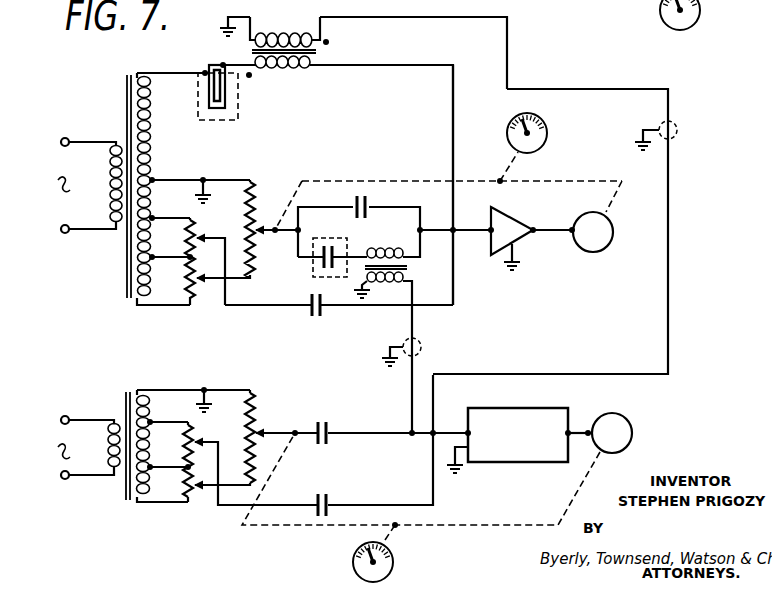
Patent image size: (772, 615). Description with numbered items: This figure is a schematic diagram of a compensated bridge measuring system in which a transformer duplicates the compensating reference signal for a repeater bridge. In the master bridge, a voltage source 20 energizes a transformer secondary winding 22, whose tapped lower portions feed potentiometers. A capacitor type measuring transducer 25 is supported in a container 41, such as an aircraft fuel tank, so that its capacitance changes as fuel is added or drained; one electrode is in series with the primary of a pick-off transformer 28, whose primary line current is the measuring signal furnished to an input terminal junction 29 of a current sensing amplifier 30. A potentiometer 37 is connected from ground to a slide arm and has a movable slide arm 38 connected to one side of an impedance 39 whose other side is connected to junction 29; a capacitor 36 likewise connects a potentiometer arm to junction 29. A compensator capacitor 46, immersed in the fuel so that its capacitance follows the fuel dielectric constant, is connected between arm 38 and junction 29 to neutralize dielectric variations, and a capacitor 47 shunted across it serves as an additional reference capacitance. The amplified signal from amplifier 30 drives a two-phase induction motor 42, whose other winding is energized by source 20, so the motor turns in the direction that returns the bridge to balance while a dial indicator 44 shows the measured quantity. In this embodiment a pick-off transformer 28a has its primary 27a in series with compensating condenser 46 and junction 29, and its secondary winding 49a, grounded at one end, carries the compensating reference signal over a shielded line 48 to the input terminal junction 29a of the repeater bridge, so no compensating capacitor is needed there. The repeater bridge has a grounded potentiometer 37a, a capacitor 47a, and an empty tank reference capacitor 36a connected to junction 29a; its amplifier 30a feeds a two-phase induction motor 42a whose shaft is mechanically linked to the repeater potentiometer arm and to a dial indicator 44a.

The voltage source 20 is at (92, 205).
The secondary winding 22 is at (150, 156).
The capacitor type measuring transducer 25 is at (232, 93).
The container 41 is at (238, 108).
The pick-off transformer 28 is at (320, 52).
The potentiometer 37 is at (262, 192).
The movable slide arm 38 is at (275, 234).
The capacitor 47 is at (354, 200).
The impedance 39 is at (388, 214).
The compensator capacitor 46 is at (313, 268).
The primary winding 27a is at (385, 247).
The pick-off transformer 28a is at (408, 272).
The secondary winding 49a is at (392, 284).
The capacitor 36 is at (305, 316).
The input terminal junction 29 is at (455, 228).
The current sensing amplifier 30 is at (508, 233).
The two-phase induction motor 42 is at (613, 232).
The dial indicator 44 is at (547, 135).
The shielded line 48 is at (669, 292).
The potentiometer 37a is at (258, 415).
The capacitor 47a is at (333, 430).
The empty tank reference capacitor 36a is at (333, 500).
The input terminal junction 29a is at (436, 430).
The amplifier 30a is at (518, 408).
The two-phase induction motor 42a is at (628, 427).
The dial indicator 44a is at (392, 556).